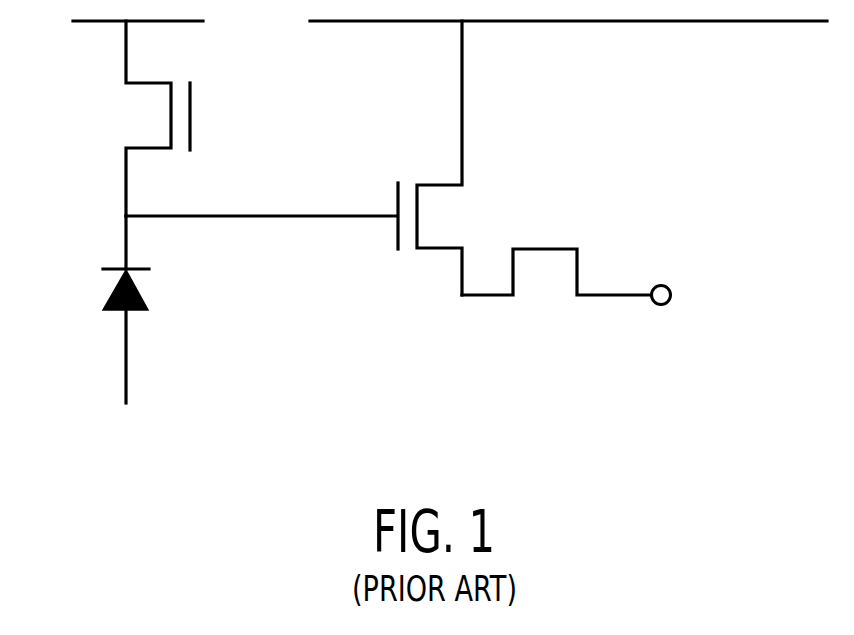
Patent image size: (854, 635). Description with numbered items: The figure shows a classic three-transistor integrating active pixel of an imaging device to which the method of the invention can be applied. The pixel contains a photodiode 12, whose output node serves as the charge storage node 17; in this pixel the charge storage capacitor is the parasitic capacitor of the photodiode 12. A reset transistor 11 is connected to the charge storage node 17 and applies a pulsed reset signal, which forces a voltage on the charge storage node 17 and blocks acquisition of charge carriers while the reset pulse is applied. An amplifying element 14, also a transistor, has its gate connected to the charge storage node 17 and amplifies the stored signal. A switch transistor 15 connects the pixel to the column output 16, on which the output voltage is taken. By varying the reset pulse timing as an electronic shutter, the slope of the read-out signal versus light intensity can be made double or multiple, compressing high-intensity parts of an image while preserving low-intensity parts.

The reset transistor 11 is at (198, 118).
The photodiode 12 is at (88, 309).
The amplifying element 14 is at (398, 158).
The switch transistor 15 is at (577, 229).
The column output 16 is at (678, 321).
The charge storage node 17 is at (216, 213).